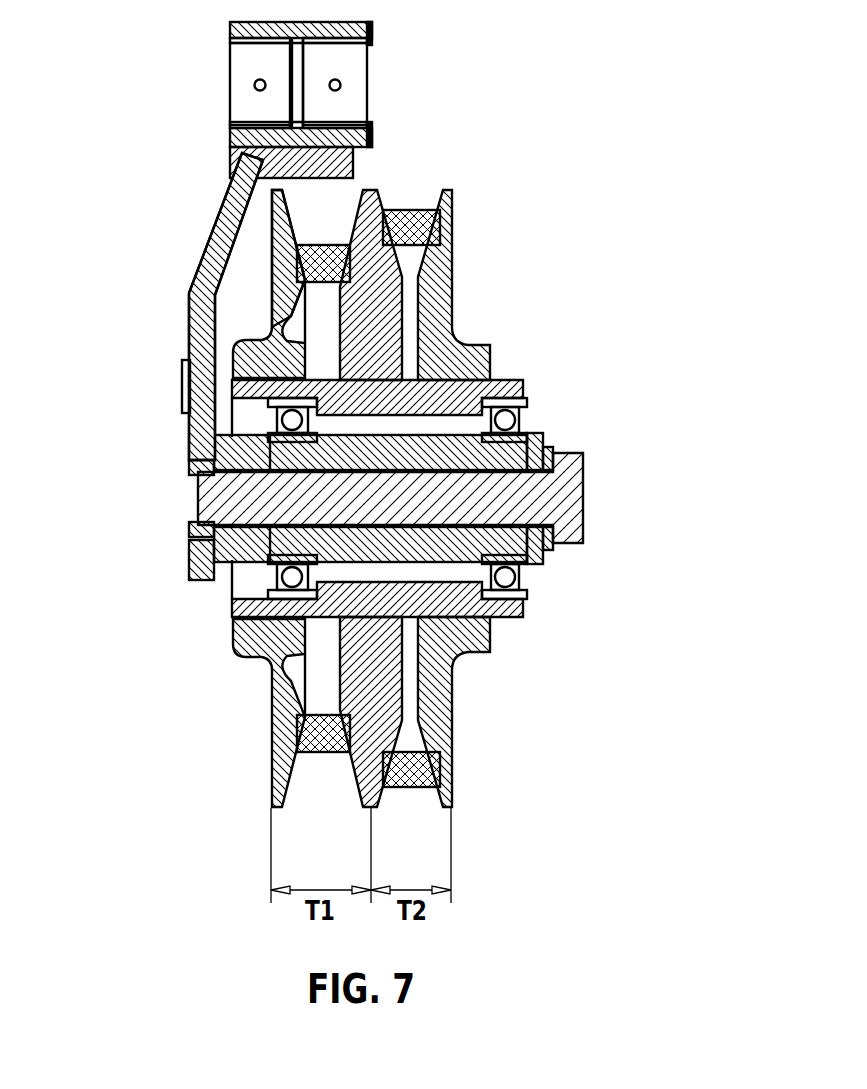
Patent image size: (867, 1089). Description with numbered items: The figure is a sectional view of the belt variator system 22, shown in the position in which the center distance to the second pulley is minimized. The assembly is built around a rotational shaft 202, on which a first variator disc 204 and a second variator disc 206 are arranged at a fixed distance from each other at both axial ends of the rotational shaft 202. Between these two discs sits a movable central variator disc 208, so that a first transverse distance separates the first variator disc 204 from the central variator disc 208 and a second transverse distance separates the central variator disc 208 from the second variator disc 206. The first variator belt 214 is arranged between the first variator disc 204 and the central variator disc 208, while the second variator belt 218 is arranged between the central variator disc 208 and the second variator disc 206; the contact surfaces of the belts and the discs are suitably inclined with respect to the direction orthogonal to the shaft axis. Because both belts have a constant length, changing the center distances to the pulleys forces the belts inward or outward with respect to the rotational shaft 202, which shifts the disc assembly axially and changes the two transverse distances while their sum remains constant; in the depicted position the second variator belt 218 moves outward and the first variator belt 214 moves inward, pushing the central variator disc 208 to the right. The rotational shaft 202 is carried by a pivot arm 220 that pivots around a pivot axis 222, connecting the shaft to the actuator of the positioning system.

The belt variator system 22 is at (603, 420).
The rotational shaft 202 is at (577, 507).
The first variator disc 204 is at (277, 337).
The second variator disc 206 is at (488, 345).
The central variator disc 208 is at (363, 800).
The first variator belt 214 is at (277, 233).
The second variator belt 218 is at (450, 220).
The pivot arm 220 is at (202, 307).
The pivot axis 222 is at (248, 108).